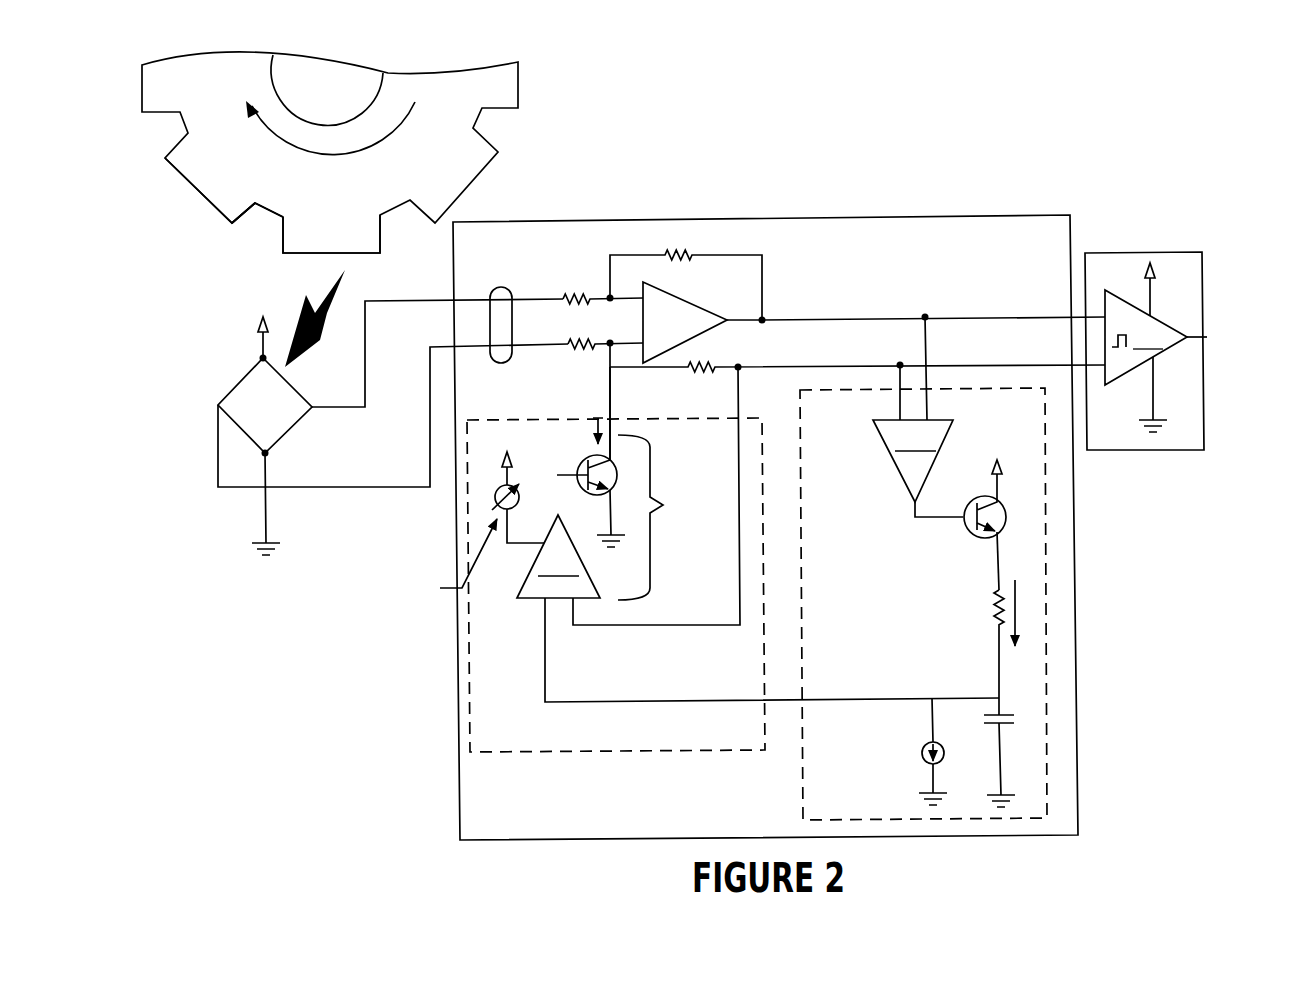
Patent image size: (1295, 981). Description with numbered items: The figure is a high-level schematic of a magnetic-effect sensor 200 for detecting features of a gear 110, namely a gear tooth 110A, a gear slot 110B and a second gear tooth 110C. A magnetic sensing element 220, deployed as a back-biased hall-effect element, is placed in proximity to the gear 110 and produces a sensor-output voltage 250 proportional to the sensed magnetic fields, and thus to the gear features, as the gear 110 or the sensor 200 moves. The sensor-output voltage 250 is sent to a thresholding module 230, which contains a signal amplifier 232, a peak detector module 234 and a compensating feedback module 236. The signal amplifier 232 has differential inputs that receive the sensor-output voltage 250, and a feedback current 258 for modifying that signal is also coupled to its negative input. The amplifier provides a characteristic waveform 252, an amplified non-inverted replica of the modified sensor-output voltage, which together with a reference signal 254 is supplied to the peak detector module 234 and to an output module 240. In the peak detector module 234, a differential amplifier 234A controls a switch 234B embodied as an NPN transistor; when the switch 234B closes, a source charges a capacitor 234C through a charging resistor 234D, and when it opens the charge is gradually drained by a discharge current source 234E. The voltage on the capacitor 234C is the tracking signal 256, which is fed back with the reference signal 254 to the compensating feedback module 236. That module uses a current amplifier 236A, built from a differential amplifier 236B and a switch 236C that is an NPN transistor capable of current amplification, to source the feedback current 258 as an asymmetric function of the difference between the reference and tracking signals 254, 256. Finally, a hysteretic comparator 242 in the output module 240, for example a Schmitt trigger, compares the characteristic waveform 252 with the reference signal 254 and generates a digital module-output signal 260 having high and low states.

The gear 110 is at (500, 62).
The gear tooth 110A is at (305, 253).
The gear slot 110B is at (255, 232).
The second gear tooth 110C is at (208, 213).
The magnetic-effect sensor 200 is at (878, 118).
The magnetic sensing element 220 is at (230, 382).
The thresholding module 230 is at (863, 217).
The signal amplifier 232 is at (680, 297).
The peak detector module 234 is at (1045, 652).
The differential amplifier 234A is at (918, 417).
The switch 234B is at (970, 541).
The capacitor 234C is at (1022, 724).
The charging resistor 234D is at (989, 640).
The discharge current source 234E is at (919, 769).
The compensating feedback module 236 is at (618, 752).
The current amplifier 236A is at (510, 494).
The differential amplifier 236B is at (445, 526).
The switch 236C is at (578, 453).
The output module 240 is at (1143, 252).
The hysteretic comparator 242 is at (1146, 347).
The sensor-output voltage 250 is at (502, 287).
The characteristic waveform 252 is at (970, 313).
The reference signal 254 is at (742, 363).
The tracking signal 256 is at (545, 663).
The feedback current 258 is at (610, 380).
The digital module-output signal 260 is at (1190, 333).